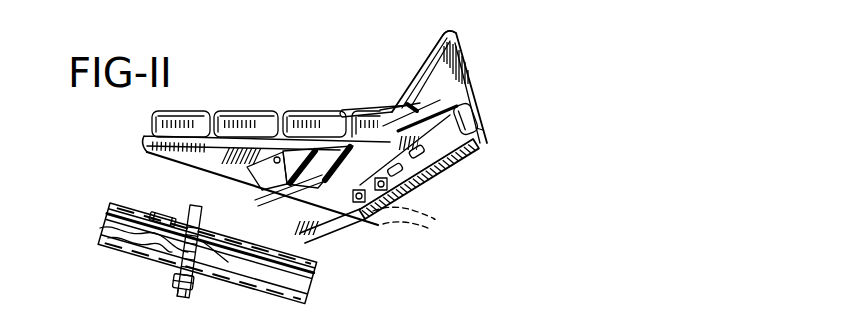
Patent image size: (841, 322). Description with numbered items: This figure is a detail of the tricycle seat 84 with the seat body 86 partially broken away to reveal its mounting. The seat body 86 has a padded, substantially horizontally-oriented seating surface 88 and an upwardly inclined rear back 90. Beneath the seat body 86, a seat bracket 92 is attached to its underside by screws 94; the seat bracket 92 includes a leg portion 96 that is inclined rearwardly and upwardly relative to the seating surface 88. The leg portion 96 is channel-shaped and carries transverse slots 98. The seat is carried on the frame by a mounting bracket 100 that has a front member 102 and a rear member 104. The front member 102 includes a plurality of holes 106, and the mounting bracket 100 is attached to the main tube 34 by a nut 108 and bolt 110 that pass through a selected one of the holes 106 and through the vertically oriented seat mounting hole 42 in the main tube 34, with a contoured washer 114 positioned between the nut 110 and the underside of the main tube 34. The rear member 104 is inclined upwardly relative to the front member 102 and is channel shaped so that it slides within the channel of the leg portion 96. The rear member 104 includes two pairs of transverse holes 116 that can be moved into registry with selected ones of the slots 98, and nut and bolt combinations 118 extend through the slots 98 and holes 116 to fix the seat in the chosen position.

The main tube 34 is at (313, 281).
The seat mounting hole 42 is at (200, 262).
The seat 84 is at (392, 230).
The seat body 86 is at (462, 86).
The seating surface 88 is at (245, 118).
The rear back 90 is at (426, 53).
The seat bracket 92 is at (424, 189).
The screws 94 is at (409, 103).
The leg portion 96 is at (458, 163).
The transverse slots 98 is at (480, 125).
The mounting bracket 100 is at (316, 246).
The front member 102 is at (152, 205).
The rear member 104 is at (318, 242).
The holes 106 is at (226, 224).
The nut 108 is at (112, 228).
The bolt 110 is at (172, 283).
The contoured washer 114 is at (172, 266).
The transverse holes 116 is at (424, 219).
The nut and bolt combinations 118 is at (380, 177).